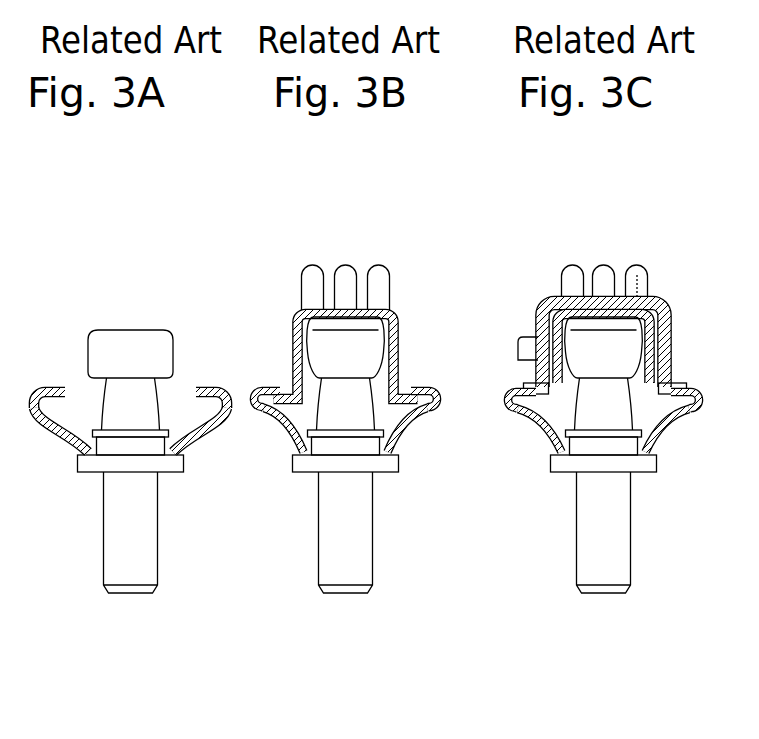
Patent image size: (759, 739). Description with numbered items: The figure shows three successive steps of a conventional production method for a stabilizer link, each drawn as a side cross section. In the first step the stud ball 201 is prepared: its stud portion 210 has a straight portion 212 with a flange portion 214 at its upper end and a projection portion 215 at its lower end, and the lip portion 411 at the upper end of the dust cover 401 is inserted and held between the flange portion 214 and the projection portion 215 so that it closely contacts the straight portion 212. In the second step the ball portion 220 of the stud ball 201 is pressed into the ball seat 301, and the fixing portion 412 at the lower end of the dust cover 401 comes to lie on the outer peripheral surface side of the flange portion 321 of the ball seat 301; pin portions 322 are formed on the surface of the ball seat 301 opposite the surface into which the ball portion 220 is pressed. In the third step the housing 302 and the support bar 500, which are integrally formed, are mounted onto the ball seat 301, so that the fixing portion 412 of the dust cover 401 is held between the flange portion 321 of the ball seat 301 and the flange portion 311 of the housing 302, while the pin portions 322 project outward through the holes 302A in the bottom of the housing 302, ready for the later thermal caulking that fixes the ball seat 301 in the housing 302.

In FIG. 3A, the stud ball 201 is at (141, 436).
In FIG. 3B, the stud ball 201 is at (379, 439).
In FIG. 3C, the stud ball 201 is at (638, 444).
In FIG. 3A, the stud portion 210 is at (117, 548).
In FIG. 3A, the straight portion 212 is at (113, 447).
In FIG. 3A, the flange portion 214 is at (167, 463).
In FIG. 3A, the projection portion 215 is at (97, 428).
In FIG. 3A, the ball portion 220 is at (125, 345).
In FIG. 3B, the ball portion 220 is at (375, 340).
In FIG. 3C, the ball portion 220 is at (667, 313).
In FIG. 3B, the ball seat 301 is at (400, 345).
In FIG. 3C, the ball seat 301 is at (604, 348).
In FIG. 3C, the housing 302 is at (547, 313).
In FIG. 3C, the hole 302A is at (634, 270).
In FIG. 3C, the flange portion 311 is at (528, 387).
In FIG. 3B, the flange portion 321 is at (268, 392).
In FIG. 3C, the flange portion 321 is at (510, 418).
In FIG. 3B, the pin portion 322 is at (311, 280).
In FIG. 3C, the pin portion 322 is at (573, 280).
In FIG. 3A, the dust cover 401 is at (203, 427).
In FIG. 3B, the dust cover 401 is at (425, 427).
In FIG. 3C, the dust cover 401 is at (690, 423).
In FIG. 3A, the lip portion 411 is at (182, 447).
In FIG. 3B, the lip portion 411 is at (408, 453).
In FIG. 3C, the lip portion 411 is at (658, 453).
In FIG. 3A, the fixing portion 412 is at (197, 392).
In FIG. 3B, the fixing portion 412 is at (408, 393).
In FIG. 3C, the fixing portion 412 is at (670, 380).
In FIG. 3C, the support bar 500 is at (525, 347).